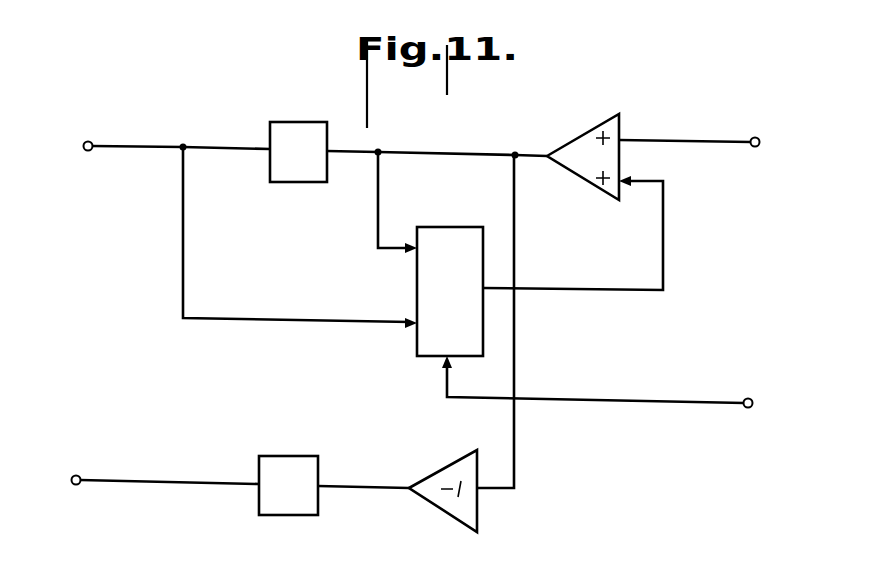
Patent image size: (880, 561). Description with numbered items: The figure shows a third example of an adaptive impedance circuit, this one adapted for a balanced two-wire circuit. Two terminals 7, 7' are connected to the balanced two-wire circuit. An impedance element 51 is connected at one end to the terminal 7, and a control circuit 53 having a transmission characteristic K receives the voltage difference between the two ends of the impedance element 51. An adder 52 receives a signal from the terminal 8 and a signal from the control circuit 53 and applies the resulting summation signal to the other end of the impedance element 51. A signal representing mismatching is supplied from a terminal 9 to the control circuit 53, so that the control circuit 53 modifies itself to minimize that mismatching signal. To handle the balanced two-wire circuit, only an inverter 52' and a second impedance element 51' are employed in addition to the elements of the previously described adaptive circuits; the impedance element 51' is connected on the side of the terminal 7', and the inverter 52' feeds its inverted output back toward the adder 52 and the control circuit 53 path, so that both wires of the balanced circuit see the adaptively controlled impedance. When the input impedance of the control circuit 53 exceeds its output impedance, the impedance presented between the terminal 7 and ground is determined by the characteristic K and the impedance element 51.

The terminal 7 is at (95, 125).
The terminal 7' is at (90, 456).
The terminal 8 is at (757, 136).
The terminal 9 is at (751, 396).
The impedance element 51 is at (298, 131).
The impedance element 51' is at (288, 464).
The adder 52 is at (580, 151).
The inverter 52' is at (443, 503).
The control circuit 53 is at (448, 233).